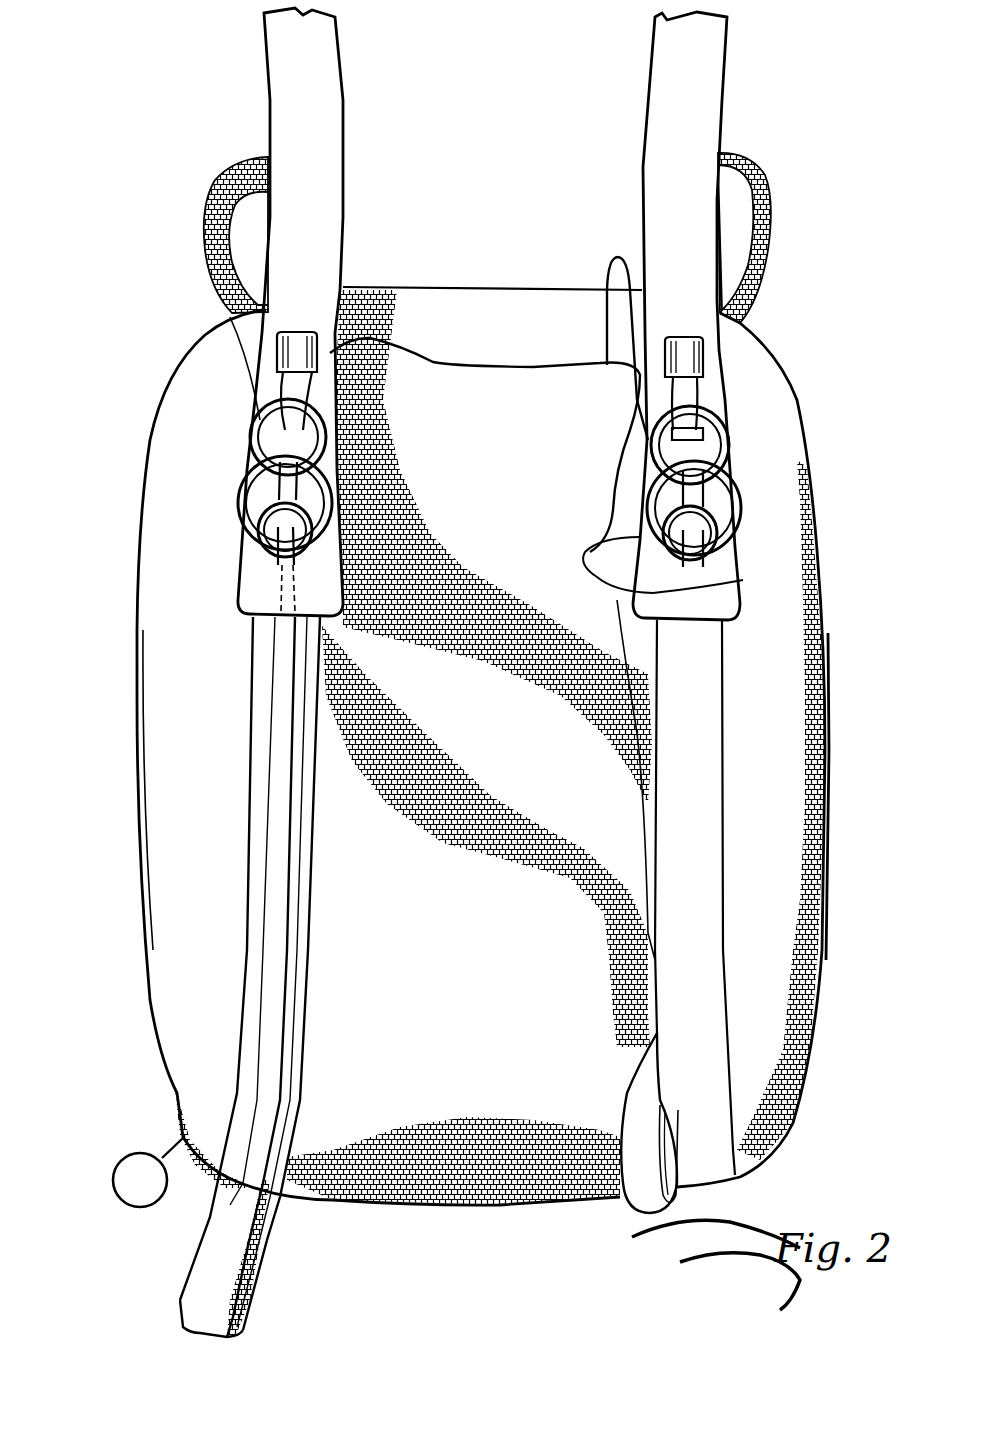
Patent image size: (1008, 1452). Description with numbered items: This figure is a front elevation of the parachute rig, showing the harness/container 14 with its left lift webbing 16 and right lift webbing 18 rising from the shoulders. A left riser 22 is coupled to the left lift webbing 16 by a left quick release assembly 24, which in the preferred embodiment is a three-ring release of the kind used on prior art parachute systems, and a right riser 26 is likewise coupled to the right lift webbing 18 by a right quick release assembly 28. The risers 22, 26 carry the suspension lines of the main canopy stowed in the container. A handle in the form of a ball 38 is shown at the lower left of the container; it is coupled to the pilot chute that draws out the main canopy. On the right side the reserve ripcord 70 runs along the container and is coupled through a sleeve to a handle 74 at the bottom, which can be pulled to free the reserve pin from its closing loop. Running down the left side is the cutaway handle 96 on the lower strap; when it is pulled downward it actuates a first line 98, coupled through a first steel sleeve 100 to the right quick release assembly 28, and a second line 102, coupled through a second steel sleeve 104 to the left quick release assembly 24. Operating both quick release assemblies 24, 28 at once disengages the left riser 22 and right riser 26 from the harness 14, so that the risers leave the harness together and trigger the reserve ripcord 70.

The harness/container 14 is at (527, 287).
The left lift webbing 16 is at (735, 183).
The right lift webbing 18 is at (243, 197).
The left riser 22 is at (698, 110).
The left quick release assembly 24 is at (730, 428).
The right riser 26 is at (290, 117).
The right quick release assembly 28 is at (247, 455).
The ball 38 is at (135, 1168).
The reserve ripcord 70 is at (645, 866).
The handle 74 is at (640, 1197).
The cutaway handle 96 is at (257, 1233).
The first line 98 is at (343, 412).
The first steel sleeve 100 is at (280, 795).
The second line 102 is at (485, 366).
The second steel sleeve 104 is at (303, 772).